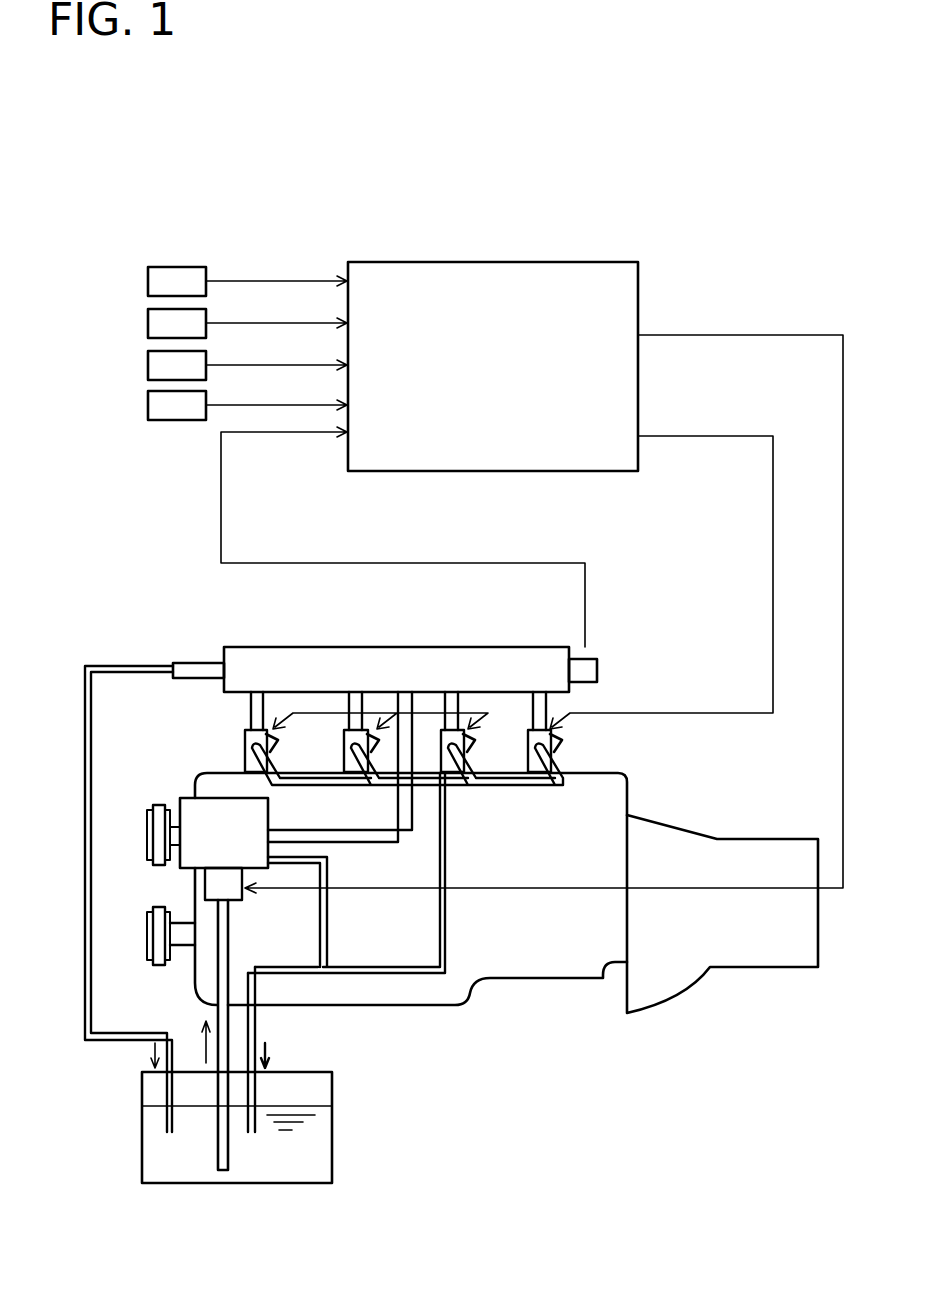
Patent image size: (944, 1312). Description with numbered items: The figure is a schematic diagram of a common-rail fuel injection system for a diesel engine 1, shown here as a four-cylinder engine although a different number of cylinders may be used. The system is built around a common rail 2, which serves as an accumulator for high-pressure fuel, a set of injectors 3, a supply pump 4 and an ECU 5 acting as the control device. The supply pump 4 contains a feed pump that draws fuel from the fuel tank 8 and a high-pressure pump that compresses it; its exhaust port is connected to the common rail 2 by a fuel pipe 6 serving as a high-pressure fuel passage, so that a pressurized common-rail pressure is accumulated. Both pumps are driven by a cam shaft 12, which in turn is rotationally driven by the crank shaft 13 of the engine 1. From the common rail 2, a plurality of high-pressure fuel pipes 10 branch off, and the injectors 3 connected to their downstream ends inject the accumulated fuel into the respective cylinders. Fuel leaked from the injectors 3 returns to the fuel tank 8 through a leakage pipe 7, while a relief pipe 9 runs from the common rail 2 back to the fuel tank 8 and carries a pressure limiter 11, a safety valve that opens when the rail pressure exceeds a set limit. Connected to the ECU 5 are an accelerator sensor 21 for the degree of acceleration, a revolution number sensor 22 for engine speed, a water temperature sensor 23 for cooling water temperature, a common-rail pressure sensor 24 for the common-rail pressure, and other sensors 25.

The engine 1 is at (490, 992).
The common rail 2 is at (425, 655).
The injectors 3 is at (245, 748).
The supply pump 4 is at (192, 797).
The ECU 5 is at (495, 262).
The fuel pipe 6 is at (372, 843).
The leakage pipe 7 is at (447, 924).
The fuel tank 8 is at (333, 1152).
The relief pipe 9 is at (92, 975).
The high-pressure fuel pipes 10 is at (352, 703).
The pressure limiter 11 is at (188, 663).
The cam shaft 12 is at (177, 832).
The crank shaft 13 is at (185, 917).
The accelerator sensor 21 is at (148, 281).
The revolution number sensor 22 is at (148, 323).
The water temperature sensor 23 is at (148, 365).
The common-rail pressure sensor 24 is at (598, 668).
The other sensors 25 is at (148, 405).